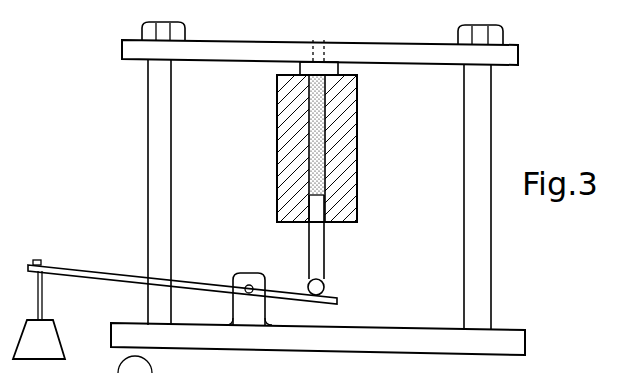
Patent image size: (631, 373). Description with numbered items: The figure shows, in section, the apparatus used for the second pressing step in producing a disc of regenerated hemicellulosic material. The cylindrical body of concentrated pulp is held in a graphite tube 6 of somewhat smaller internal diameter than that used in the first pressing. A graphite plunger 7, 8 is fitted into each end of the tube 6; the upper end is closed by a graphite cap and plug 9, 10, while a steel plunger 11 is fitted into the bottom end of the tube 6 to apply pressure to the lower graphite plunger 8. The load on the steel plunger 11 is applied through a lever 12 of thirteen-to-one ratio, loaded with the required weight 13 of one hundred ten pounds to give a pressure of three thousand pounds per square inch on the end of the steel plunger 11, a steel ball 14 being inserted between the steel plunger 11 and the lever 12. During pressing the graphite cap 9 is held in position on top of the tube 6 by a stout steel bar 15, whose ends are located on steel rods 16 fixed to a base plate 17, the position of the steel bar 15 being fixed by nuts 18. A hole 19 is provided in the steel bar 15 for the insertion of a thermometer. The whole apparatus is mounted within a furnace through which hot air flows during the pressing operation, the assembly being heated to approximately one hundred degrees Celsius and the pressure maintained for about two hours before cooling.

The graphite tube 6 is at (342, 141).
The graphite plunger 7 is at (325, 93).
The graphite plunger 8 is at (316, 200).
The graphite cap 9 is at (340, 69).
The plug 10 is at (306, 86).
The steel plunger 11 is at (313, 253).
The lever 12 is at (90, 272).
The weight 13 is at (42, 336).
The steel ball 14 is at (323, 287).
The steel bar 15 is at (384, 52).
The steel rods 16 is at (163, 134).
The base plate 17 is at (490, 339).
The nuts 18 is at (176, 31).
The hole 19 is at (324, 44).